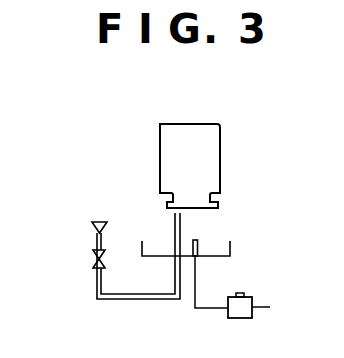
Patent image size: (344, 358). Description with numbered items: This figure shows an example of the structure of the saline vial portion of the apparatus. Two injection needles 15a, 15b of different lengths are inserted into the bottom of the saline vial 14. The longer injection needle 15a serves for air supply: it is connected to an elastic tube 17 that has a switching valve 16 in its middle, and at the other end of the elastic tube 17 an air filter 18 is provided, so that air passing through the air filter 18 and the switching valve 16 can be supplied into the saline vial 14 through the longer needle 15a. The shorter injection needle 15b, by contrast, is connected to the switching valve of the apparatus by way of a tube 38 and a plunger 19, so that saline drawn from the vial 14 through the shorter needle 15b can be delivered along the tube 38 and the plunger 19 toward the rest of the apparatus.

The saline vial 14 is at (200, 124).
The injection needle 15a is at (175, 228).
The injection needle 15b is at (196, 239).
The switching valve 16 is at (90, 255).
The elastic tube 17 is at (145, 300).
The air filter 18 is at (93, 223).
The plunger 19 is at (243, 294).
The tube 38 is at (198, 278).